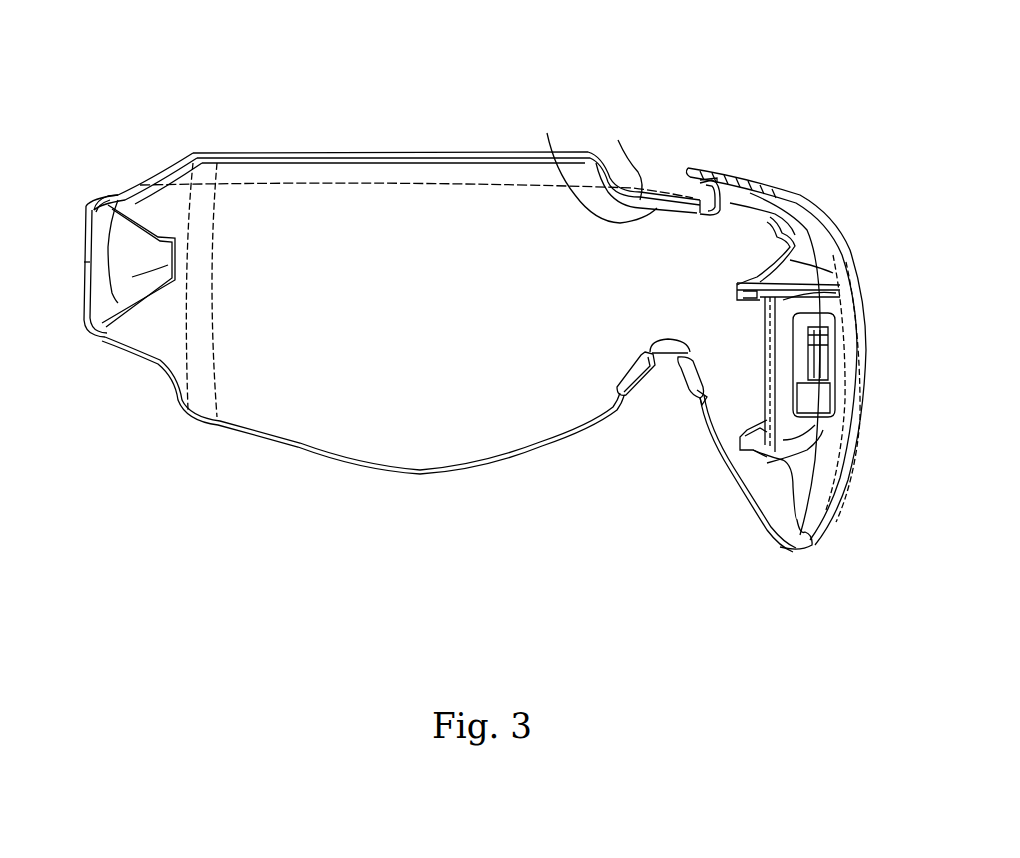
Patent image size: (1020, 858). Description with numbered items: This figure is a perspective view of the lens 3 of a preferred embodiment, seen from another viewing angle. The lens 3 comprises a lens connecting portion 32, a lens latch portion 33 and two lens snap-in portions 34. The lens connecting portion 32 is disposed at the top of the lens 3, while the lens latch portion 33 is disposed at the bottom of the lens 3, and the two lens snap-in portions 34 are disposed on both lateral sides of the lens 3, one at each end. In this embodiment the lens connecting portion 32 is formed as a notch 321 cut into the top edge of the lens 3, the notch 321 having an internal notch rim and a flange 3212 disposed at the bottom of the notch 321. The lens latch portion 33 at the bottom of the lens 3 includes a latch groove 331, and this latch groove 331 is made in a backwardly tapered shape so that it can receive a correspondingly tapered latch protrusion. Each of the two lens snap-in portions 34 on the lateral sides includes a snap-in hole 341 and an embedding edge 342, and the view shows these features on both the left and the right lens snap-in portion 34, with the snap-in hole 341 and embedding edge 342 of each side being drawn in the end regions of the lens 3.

The lens 3 is at (446, 113).
The lens connecting portion 32 is at (667, 183).
The notch 321 is at (548, 140).
The flange 3212 is at (618, 140).
The lens latch portion 33 is at (668, 372).
The latch groove 331 is at (667, 353).
The lens snap-in portion 34 is at (99, 164).
The snap-in hole 341 is at (130, 238).
The embedding edge 342 is at (132, 277).